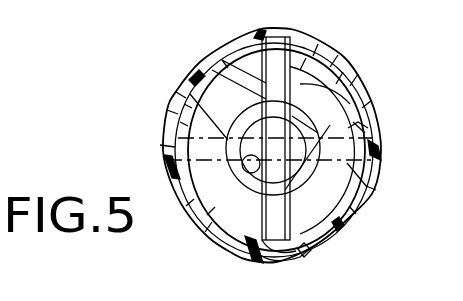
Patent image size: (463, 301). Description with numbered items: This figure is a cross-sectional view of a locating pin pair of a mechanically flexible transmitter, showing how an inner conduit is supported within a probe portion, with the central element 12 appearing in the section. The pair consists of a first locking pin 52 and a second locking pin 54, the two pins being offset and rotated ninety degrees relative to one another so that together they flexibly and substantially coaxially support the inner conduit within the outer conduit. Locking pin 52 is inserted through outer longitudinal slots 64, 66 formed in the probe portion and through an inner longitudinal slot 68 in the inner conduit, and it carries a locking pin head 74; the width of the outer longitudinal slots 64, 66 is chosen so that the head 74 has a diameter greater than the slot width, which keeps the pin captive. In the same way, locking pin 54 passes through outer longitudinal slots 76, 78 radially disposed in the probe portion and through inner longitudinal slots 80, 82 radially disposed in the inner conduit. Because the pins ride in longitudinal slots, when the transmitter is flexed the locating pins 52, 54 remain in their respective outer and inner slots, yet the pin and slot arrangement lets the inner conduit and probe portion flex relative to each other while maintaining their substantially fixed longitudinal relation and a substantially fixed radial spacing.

The elongate bar 12 is at (291, 34).
The locking pin 52 is at (222, 60).
The locking pin 54 is at (353, 133).
The outer longitudinal slot 64 is at (333, 63).
The outer longitudinal slot 66 is at (305, 256).
The inner longitudinal slot 68 is at (333, 83).
The locking pin head 74 is at (257, 262).
The outer longitudinal slot 76 is at (165, 148).
The outer longitudinal slot 78 is at (380, 153).
The inner longitudinal slot 80 is at (178, 96).
The inner longitudinal slot 82 is at (365, 180).